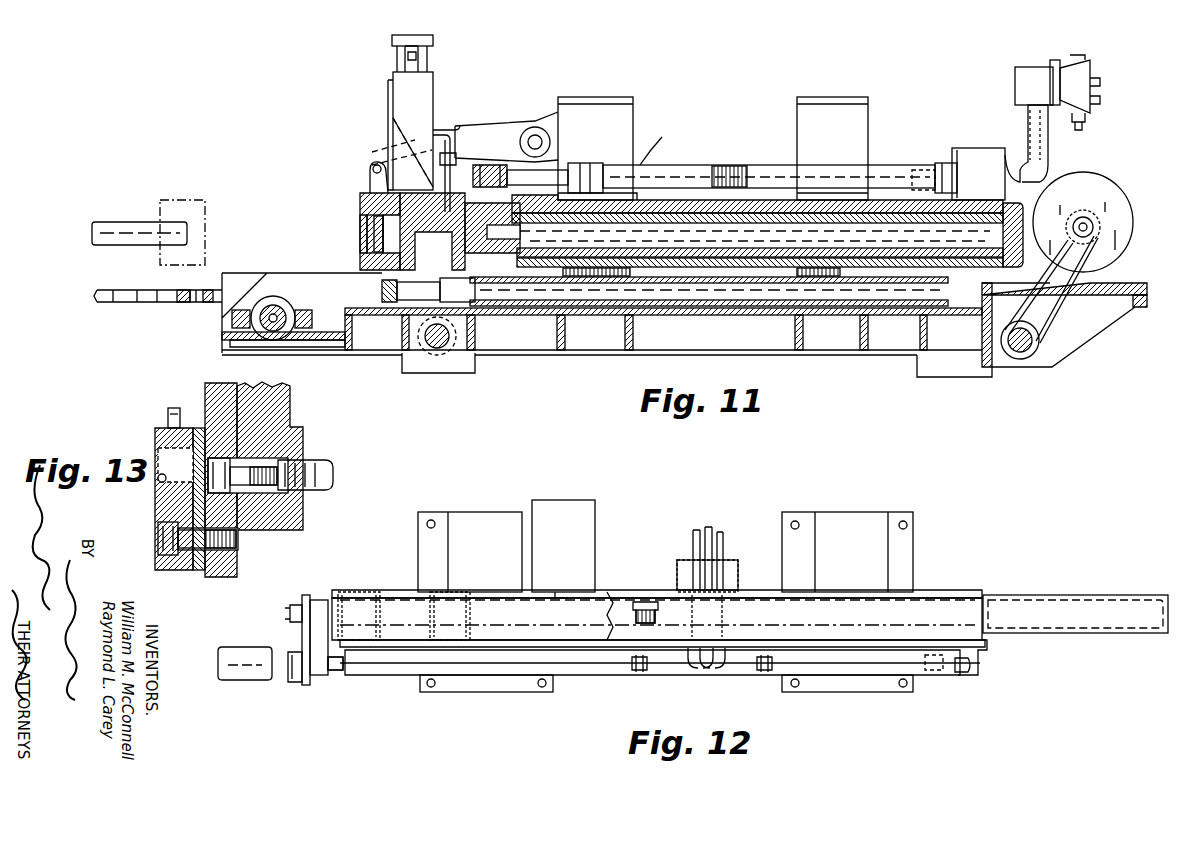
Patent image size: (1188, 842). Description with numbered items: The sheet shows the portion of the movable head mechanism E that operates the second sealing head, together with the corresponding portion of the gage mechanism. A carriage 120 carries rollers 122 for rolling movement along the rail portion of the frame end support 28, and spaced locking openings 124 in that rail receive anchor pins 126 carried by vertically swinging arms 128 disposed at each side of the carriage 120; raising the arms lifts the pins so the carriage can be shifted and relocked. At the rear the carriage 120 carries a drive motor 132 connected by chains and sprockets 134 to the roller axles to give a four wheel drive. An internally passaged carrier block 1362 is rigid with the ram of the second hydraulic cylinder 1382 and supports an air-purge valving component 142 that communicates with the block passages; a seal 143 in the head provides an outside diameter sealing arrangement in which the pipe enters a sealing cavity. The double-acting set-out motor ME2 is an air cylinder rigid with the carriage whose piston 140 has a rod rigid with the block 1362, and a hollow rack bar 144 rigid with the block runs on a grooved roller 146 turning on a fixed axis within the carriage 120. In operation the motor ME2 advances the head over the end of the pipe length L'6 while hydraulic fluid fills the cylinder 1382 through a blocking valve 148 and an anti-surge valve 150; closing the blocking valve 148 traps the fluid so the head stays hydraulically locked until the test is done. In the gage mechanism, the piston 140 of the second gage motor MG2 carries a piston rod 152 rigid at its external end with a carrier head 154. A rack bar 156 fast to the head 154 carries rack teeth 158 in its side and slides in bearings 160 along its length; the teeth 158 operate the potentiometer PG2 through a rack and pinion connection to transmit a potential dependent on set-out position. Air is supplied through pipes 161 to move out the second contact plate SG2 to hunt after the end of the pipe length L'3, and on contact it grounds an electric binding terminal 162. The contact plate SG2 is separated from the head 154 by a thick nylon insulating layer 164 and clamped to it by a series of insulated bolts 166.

In FIG. 11, the pipe length L'6 is at (146, 225).
In FIG. 11, the rollers 122 is at (360, 204).
In FIG. 11, the air-purge valving component 142 is at (395, 98).
In FIG. 11, the vertically swinging arms 128 is at (478, 132).
In FIG. 11, the movable head mechanism E is at (651, 136).
In FIG. 11, the double-acting set-out motor ME2 is at (692, 165).
In FIG. 11, the second hydraulic ram and cylinder 1382 is at (760, 207).
In FIG. 11, the piston 140 is at (921, 170).
In FIG. 12, the piston 140 is at (943, 672).
In FIG. 11, the anti-surge valve 150 is at (990, 150).
In FIG. 11, the blocking valve 148 is at (1092, 70).
In FIG. 11, the drive motor 132 is at (1108, 180).
In FIG. 11, the anchor pins 126 is at (368, 192).
In FIG. 11, the seal 143 is at (366, 232).
In FIG. 11, the grooved roller 146 is at (282, 298).
In FIG. 11, the carrier block 1362 is at (385, 280).
In FIG. 11, the carriage 120 is at (272, 275).
In FIG. 11, the frame end support rail portion 28 is at (110, 304).
In FIG. 11, the locking openings 124 is at (200, 304).
In FIG. 11, the hollow rack bar 144 is at (775, 318).
In FIG. 11, the chains and sprockets 134 is at (1032, 356).
In FIG. 13, the insulating layer 164 is at (200, 426).
In FIG. 13, the electric binding terminal 162 is at (168, 414).
In FIG. 13, the carrier head 154 is at (290, 404).
In FIG. 12, the carrier head 154 is at (300, 638).
In FIG. 13, the piston rod 152 is at (320, 462).
In FIG. 12, the piston rod 152 is at (331, 672).
In FIG. 13, the insulated bolts 166 is at (158, 480).
In FIG. 13, the second contact plate SG2 is at (158, 545).
In FIG. 12, the second contact plate SG2 is at (288, 677).
In FIG. 12, the bearings 160 is at (352, 596).
In FIG. 12, the potentiometer PG2 is at (598, 516).
In FIG. 12, the pipes 161 is at (722, 542).
In FIG. 12, the rack bar 156 is at (648, 600).
In FIG. 12, the rack teeth 158 is at (640, 598).
In FIG. 12, the pipe length L'3 is at (234, 650).
In FIG. 12, the second gage motor MG2 is at (624, 678).